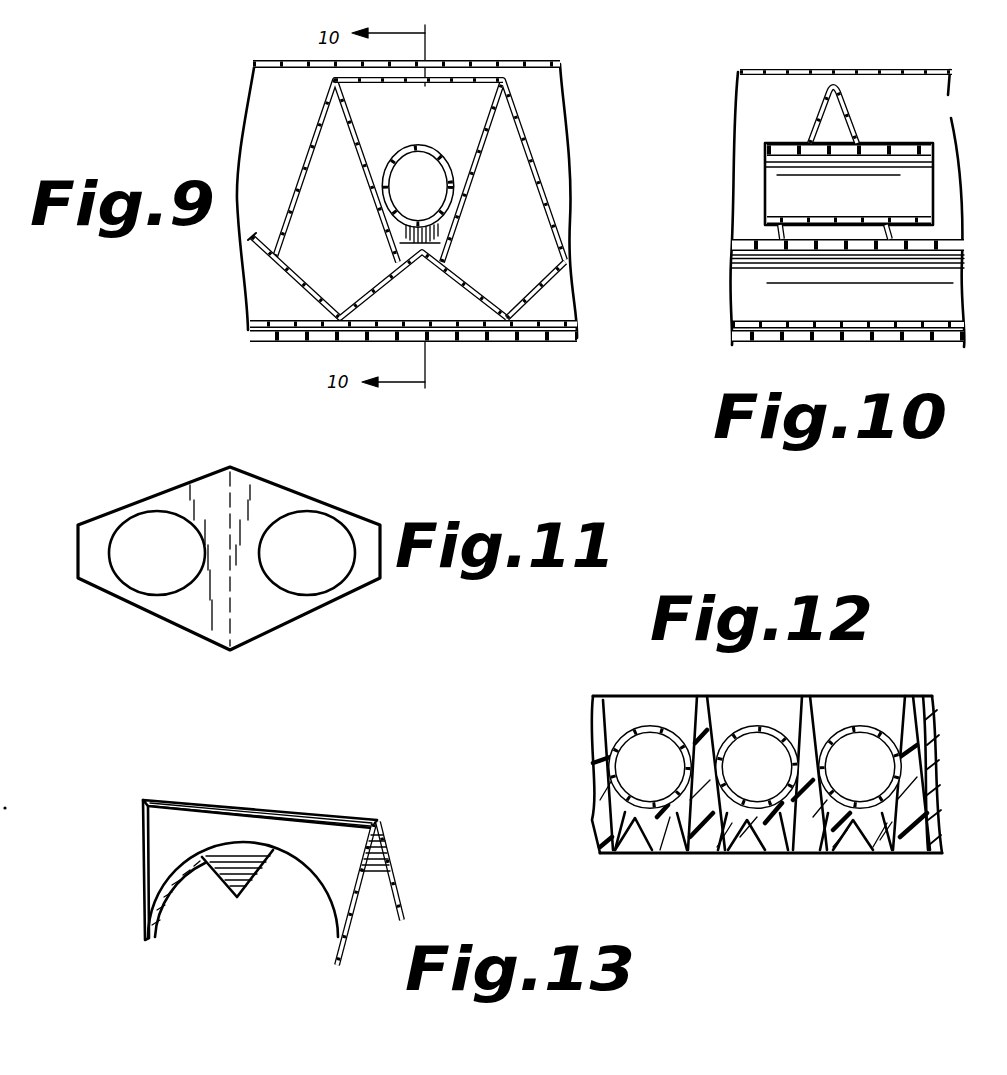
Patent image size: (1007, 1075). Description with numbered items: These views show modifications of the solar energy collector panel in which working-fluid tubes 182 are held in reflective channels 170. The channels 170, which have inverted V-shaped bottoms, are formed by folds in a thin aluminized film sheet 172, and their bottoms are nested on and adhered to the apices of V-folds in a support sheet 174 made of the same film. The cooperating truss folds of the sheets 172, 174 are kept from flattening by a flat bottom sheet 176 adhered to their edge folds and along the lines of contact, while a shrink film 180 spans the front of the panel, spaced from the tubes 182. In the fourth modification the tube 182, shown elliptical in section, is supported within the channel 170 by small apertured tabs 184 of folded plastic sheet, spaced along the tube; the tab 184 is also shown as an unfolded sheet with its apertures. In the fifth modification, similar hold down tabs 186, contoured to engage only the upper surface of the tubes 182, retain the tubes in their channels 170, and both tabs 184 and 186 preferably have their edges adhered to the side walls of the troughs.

In FIG. 10, the channel 170 is at (906, 95).
In FIG. 9, the film sheet 172 is at (523, 136).
In FIG. 10, the film sheet 172 is at (770, 103).
In FIG. 9, the support sheet 174 is at (471, 302).
In FIG. 10, the support sheet 174 is at (807, 310).
In FIG. 9, the flat bottom sheet 176 is at (533, 322).
In FIG. 10, the flat bottom sheet 176 is at (908, 327).
In FIG. 9, the shrink film 180 is at (540, 58).
In FIG. 10, the shrink film 180 is at (877, 70).
In FIG. 9, the tube 182 is at (437, 146).
In FIG. 10, the tube 182 is at (900, 143).
In FIG. 9, the apertured tab 184 is at (375, 107).
In FIG. 10, the apertured tab 184 is at (856, 142).
In FIG. 11, the apertured tab 184 is at (275, 622).
In FIG. 12, the hold down tab 186 is at (620, 705).
In FIG. 13, the hold down tab 186 is at (348, 822).